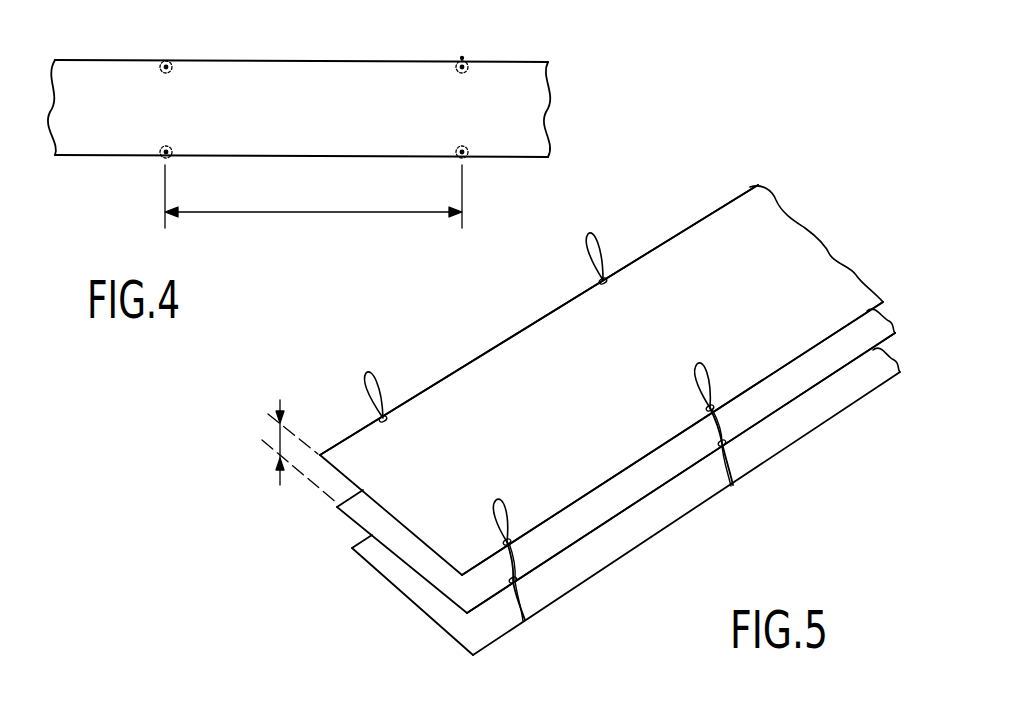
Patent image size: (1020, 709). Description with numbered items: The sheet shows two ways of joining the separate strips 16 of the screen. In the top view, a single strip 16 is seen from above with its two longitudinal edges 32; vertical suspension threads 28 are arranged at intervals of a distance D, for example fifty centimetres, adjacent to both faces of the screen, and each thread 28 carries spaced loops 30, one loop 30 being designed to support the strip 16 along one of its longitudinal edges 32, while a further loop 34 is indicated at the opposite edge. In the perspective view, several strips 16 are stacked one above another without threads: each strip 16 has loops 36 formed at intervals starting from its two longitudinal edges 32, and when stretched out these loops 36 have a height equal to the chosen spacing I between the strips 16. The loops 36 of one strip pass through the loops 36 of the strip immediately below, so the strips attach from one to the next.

In FIG. 4, the strip 16 is at (508, 101).
In FIG. 5, the strip 16 is at (848, 390).
In FIG. 4, the suspension thread 28 is at (166, 57).
In FIG. 4, the loop 30 is at (160, 75).
In FIG. 4, the longitudinal edge 32 is at (318, 61).
In FIG. 5, the longitudinal edge 32 is at (497, 345).
In FIG. 4, the hole 34 is at (170, 148).
In FIG. 5, the loop 36 is at (366, 371).
In FIG. 4, the distance D is at (305, 214).
In FIG. 5, the spacing I is at (277, 437).